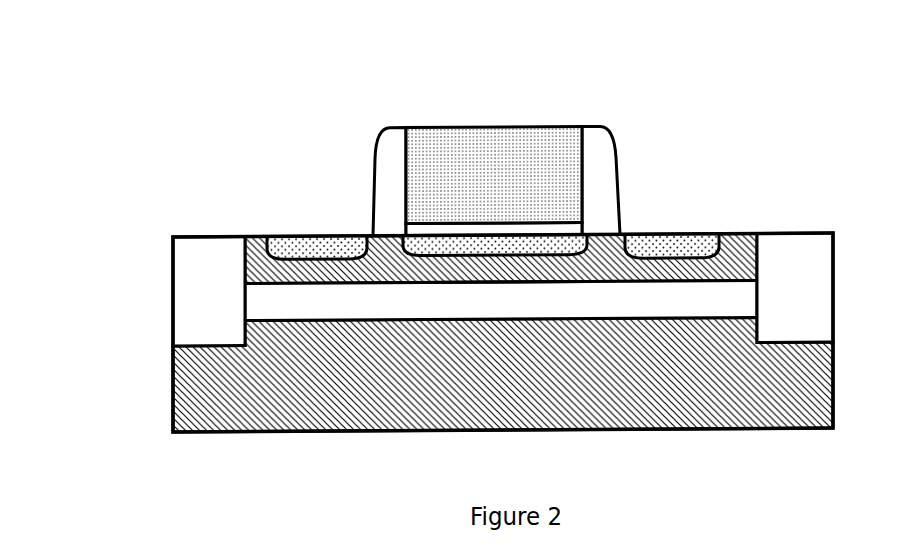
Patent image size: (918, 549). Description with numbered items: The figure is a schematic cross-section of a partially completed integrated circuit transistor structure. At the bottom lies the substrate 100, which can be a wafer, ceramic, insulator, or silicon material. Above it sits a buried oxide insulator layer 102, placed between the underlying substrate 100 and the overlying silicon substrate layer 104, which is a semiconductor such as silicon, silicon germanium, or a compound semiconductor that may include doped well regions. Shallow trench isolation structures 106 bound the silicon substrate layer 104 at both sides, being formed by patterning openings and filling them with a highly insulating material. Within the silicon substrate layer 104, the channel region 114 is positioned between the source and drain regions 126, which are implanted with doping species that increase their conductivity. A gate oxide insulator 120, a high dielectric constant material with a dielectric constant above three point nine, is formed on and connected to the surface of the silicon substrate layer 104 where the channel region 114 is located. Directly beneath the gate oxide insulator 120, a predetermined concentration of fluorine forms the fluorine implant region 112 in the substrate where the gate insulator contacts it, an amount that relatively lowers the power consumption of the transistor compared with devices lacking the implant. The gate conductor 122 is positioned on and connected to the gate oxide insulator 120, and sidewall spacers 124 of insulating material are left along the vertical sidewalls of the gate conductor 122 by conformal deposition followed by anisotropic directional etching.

The substrate 100 is at (170, 378).
The buried oxide insulator layer 102 is at (243, 305).
The silicon substrate layer 104 is at (243, 262).
The isolation region 106 is at (170, 262).
The fluorine implant region 112 is at (497, 262).
The channel region 114 is at (540, 270).
The gate oxide insulator 120 is at (498, 222).
The gate conductor 122 is at (495, 127).
The sidewall spacers 124 is at (395, 127).
The source and drain regions 126 is at (300, 235).